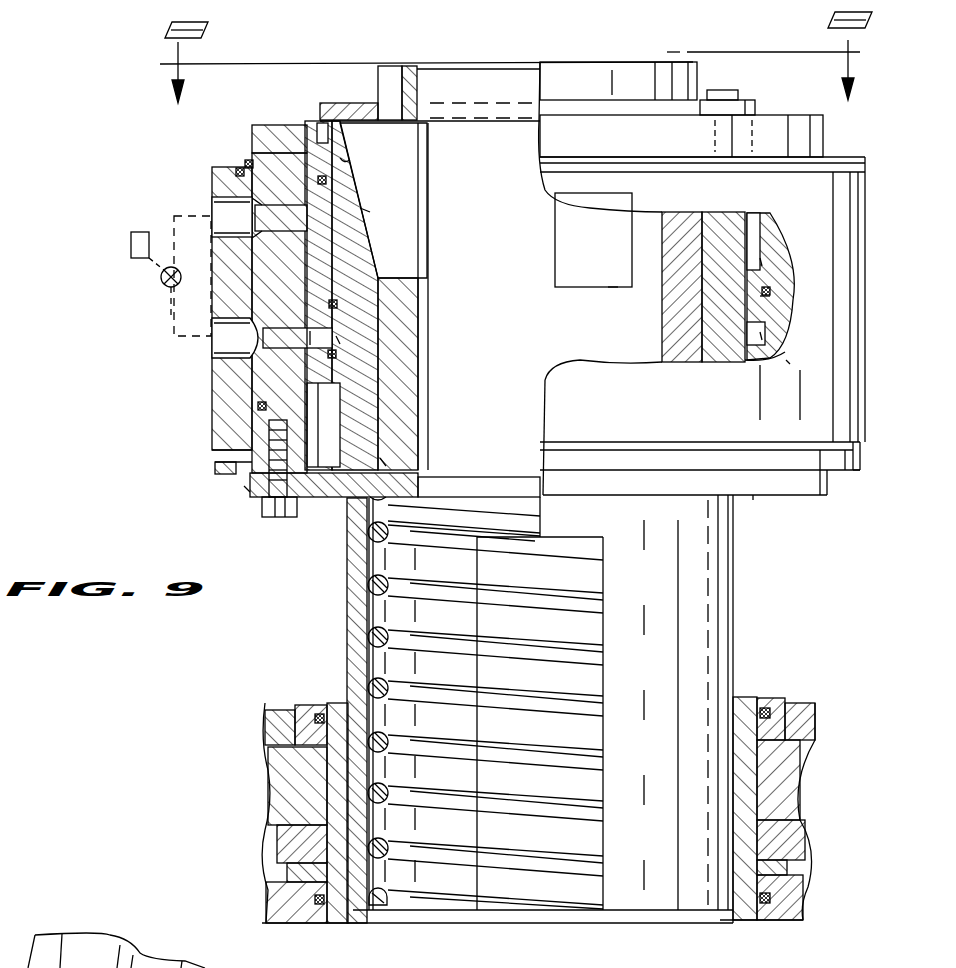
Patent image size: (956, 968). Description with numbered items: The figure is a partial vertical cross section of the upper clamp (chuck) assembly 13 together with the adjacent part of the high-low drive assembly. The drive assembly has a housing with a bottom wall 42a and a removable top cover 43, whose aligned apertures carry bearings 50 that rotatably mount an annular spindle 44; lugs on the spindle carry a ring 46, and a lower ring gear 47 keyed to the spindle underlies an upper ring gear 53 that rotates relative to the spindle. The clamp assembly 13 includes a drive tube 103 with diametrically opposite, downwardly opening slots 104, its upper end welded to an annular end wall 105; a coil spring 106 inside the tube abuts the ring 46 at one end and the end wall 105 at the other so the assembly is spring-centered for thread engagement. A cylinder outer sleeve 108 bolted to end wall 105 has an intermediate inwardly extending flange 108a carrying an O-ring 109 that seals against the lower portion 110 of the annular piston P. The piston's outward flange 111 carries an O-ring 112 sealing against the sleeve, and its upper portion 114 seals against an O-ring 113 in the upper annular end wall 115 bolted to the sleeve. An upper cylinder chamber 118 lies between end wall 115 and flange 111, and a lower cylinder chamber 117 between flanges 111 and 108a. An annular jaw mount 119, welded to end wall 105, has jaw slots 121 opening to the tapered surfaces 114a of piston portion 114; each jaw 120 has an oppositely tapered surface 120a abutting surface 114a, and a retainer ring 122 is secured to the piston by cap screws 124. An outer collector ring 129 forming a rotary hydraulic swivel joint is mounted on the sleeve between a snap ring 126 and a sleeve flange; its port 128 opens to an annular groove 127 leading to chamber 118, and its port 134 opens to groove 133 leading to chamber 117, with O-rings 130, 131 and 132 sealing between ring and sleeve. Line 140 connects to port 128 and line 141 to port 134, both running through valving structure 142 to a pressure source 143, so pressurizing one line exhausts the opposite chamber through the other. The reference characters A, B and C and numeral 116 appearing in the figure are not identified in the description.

The upper clamp assembly 13 is at (862, 480).
The bottom wall 42a is at (800, 911).
The removable top cover 43 is at (800, 727).
The annular spindle 44 is at (742, 708).
The ring 46 is at (528, 888).
The lower ring gear 47 is at (290, 850).
The bearing 50 is at (776, 918).
The upper ring gear 53 is at (290, 773).
The drive tube 103 is at (350, 637).
The slots 104 is at (480, 834).
The annular end wall 105 is at (753, 496).
The coil spring 106 is at (604, 604).
The cylinder outer sleeve 108 is at (775, 245).
The flange 108a is at (337, 398).
The O-ring 109 is at (315, 377).
The lower portion of piston 110 is at (350, 477).
The flange 111 is at (768, 296).
The O-ring 112 is at (313, 320).
The O-ring 113 is at (326, 180).
The piston portion 114 is at (360, 230).
The tapered surfaces 114a is at (346, 160).
The upper annular end wall 115 is at (266, 124).
The sleeve 116 is at (304, 121).
The lower cylinder chamber 117 is at (337, 365).
The upper cylinder chamber 118 is at (320, 268).
The annular jaw mount 119 is at (688, 213).
The jaw 120 is at (598, 268).
The surface 120a is at (365, 210).
The jaw slots 121 is at (612, 287).
The retainer ring 122 is at (350, 103).
The cap screws 124 is at (740, 96).
The snap ring 126 is at (246, 160).
The annular groove 127 is at (262, 228).
The port 128 is at (232, 196).
The outer collector ring 129 is at (672, 411).
The O-ring 130 is at (262, 405).
The O-ring 131 is at (262, 300).
The O-ring 132 is at (238, 170).
The annular groove 133 is at (252, 384).
The port 134 is at (230, 338).
The line 140 is at (172, 220).
The line 141 is at (172, 297).
The valving structure 142 is at (161, 277).
The source of fluid under pressure 143 is at (131, 245).
The dimension A is at (762, 335).
The dimension B is at (762, 262).
The dimension C is at (790, 362).
The annular piston P is at (342, 430).